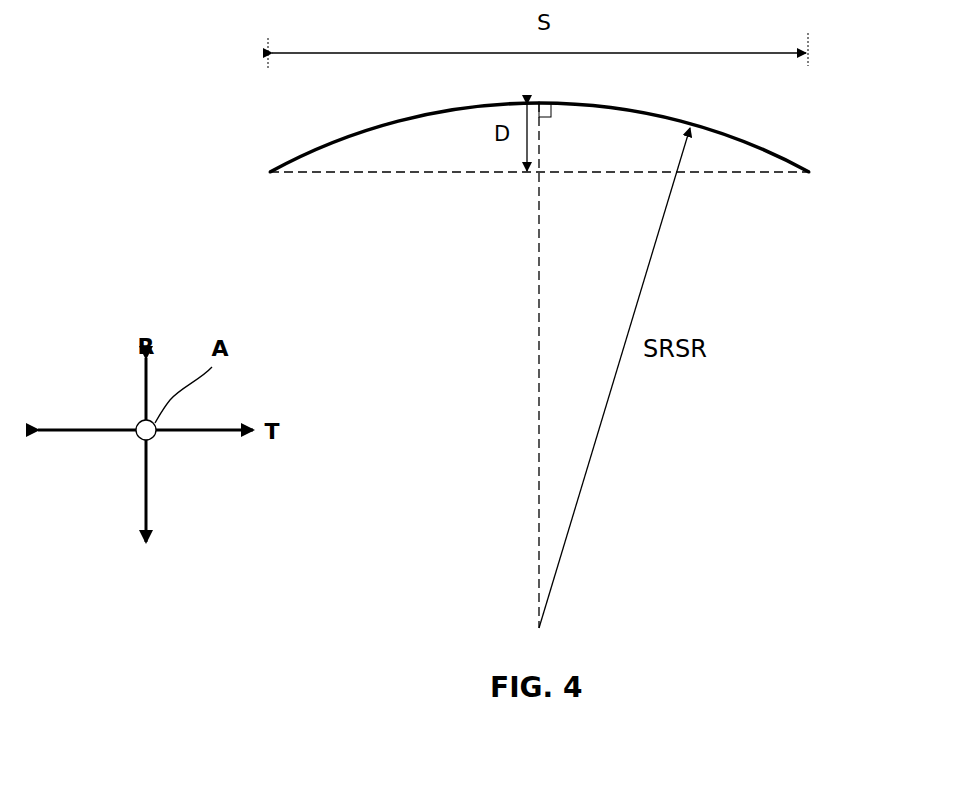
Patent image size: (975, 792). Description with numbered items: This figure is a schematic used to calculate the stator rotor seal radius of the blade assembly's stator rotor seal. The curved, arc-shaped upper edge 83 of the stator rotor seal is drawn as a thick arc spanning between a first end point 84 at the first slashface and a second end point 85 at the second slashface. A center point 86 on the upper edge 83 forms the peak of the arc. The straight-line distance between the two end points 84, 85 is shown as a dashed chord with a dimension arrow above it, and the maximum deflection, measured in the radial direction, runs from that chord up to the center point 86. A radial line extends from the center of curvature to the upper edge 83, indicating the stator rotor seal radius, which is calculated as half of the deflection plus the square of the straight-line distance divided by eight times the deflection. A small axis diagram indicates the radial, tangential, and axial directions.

The upper edge 83 is at (404, 114).
The first end point 84 is at (274, 171).
The second end point 85 is at (810, 171).
The center point 86 is at (528, 102).